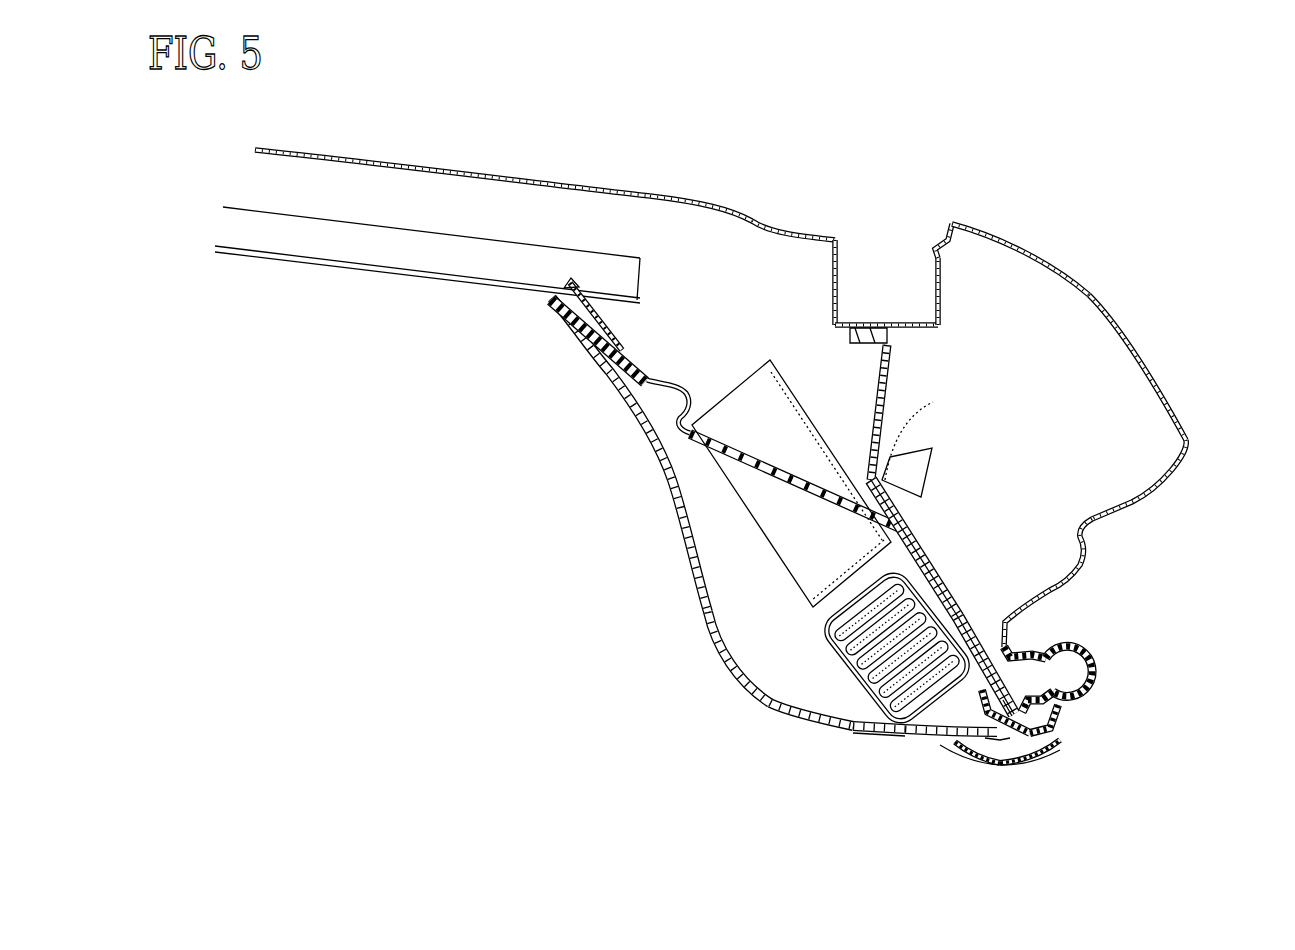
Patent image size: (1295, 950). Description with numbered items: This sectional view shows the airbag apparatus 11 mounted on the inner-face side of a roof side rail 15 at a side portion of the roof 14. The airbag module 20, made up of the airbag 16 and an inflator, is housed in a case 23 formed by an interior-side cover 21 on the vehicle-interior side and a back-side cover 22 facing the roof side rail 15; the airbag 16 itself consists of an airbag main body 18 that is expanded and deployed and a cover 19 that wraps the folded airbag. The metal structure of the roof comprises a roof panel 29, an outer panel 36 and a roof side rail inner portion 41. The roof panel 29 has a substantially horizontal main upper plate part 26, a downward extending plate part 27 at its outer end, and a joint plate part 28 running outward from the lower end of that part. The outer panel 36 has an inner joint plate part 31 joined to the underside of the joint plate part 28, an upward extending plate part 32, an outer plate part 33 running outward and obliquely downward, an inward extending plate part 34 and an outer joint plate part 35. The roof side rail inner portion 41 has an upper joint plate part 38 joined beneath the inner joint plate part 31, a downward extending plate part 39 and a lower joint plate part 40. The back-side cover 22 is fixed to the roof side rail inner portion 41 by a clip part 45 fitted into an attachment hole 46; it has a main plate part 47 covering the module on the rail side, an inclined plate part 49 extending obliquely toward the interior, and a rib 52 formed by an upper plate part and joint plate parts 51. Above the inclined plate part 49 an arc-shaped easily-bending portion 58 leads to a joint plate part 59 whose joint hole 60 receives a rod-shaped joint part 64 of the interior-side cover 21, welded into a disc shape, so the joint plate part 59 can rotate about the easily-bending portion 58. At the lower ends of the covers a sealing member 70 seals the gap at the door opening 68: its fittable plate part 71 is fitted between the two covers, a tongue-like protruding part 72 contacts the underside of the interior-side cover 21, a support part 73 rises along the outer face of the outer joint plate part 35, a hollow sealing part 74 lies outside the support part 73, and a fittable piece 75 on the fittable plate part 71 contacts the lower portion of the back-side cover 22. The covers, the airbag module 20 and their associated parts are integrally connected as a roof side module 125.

The airbag apparatus 11 is at (811, 796).
The roof 14 is at (497, 162).
The roof side rail 15 is at (1033, 241).
The airbag 16 is at (830, 660).
The airbag main body 18 is at (862, 728).
The cover 19 is at (840, 684).
The airbag module 20 is at (933, 734).
The interior-side cover 21 is at (742, 700).
The back-side cover 22 is at (760, 554).
The case 23 is at (883, 741).
The main upper plate part 26 is at (650, 188).
The downward extending plate part 27 is at (838, 268).
The joint plate part 28 is at (875, 320).
The roof panel 29 is at (752, 213).
The inner joint plate part 31 is at (920, 318).
The upward extending plate part 32 is at (941, 282).
The outer plate part 33 is at (1090, 296).
The inward extending plate part 34 is at (1112, 507).
The outer joint plate part 35 is at (1067, 733).
The outer panel 36 is at (1196, 448).
The upper joint plate part 38 is at (852, 340).
The downward extending plate part 39 is at (892, 385).
The lower joint plate part 40 is at (1047, 736).
The roof side rail inner portion 41 is at (939, 540).
The clip part 45 is at (935, 470).
The attachment hole 46 is at (928, 403).
The main plate part 47 is at (977, 630).
The inclined plate part 49 is at (810, 488).
The joint plate part 51 is at (750, 390).
The rib 52 is at (769, 358).
The easily-bending portion 58 is at (688, 393).
The joint plate part 59 is at (573, 281).
The joint hole 60 is at (607, 325).
The joint part 64 is at (627, 338).
The door opening 68 is at (1065, 735).
The sealing member 70 is at (1102, 688).
The fittable plate part 71 is at (998, 735).
The lip 72 is at (983, 755).
The support part 73 is at (1023, 750).
The hollow sealing part 74 is at (1096, 660).
The fittable piece 75 is at (1007, 712).
The roof side module 125 is at (936, 770).